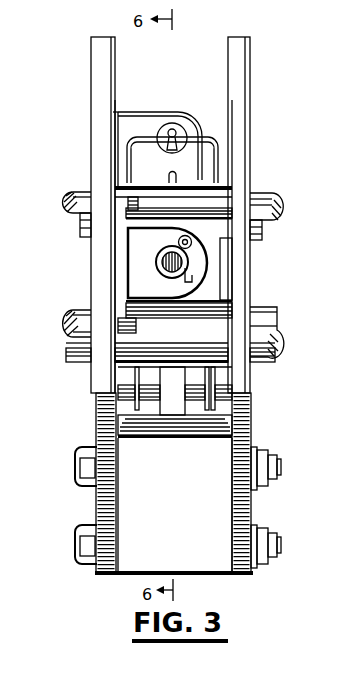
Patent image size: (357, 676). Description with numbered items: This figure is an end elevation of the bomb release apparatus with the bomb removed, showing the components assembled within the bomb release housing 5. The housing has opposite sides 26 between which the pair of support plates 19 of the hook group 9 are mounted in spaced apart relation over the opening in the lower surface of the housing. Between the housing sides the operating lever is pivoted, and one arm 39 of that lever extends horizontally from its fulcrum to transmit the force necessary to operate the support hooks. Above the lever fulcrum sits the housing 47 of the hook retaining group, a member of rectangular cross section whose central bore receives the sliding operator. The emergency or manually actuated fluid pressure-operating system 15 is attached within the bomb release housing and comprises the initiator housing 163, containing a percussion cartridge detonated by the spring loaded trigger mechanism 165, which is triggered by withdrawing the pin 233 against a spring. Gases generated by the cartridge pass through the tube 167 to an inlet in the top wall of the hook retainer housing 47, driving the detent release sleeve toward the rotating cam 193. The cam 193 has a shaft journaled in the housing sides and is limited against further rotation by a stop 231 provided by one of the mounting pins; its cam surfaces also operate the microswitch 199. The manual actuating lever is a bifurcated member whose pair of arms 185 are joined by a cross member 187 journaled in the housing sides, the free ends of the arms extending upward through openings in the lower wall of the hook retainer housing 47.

The sides of the bomb release housing 26 is at (97, 108).
The emergency or manually actuated fluid pressure-operating system 15 is at (113, 249).
The tube 167 is at (178, 177).
The stop 231 is at (125, 340).
The rotating cam 193 is at (208, 293).
The initiator housing 163 is at (125, 274).
The spring loaded trigger mechanism 165 is at (152, 262).
The pin 233 is at (166, 268).
The housing 47 is at (226, 270).
The arms 185 is at (138, 378).
The microswitch 199 is at (226, 377).
The cross member 187 is at (222, 405).
The arm of the operating lever 39 is at (173, 402).
The bomb release housing 5 is at (95, 423).
The hook group 9 is at (113, 578).
The support plates 19 is at (212, 565).